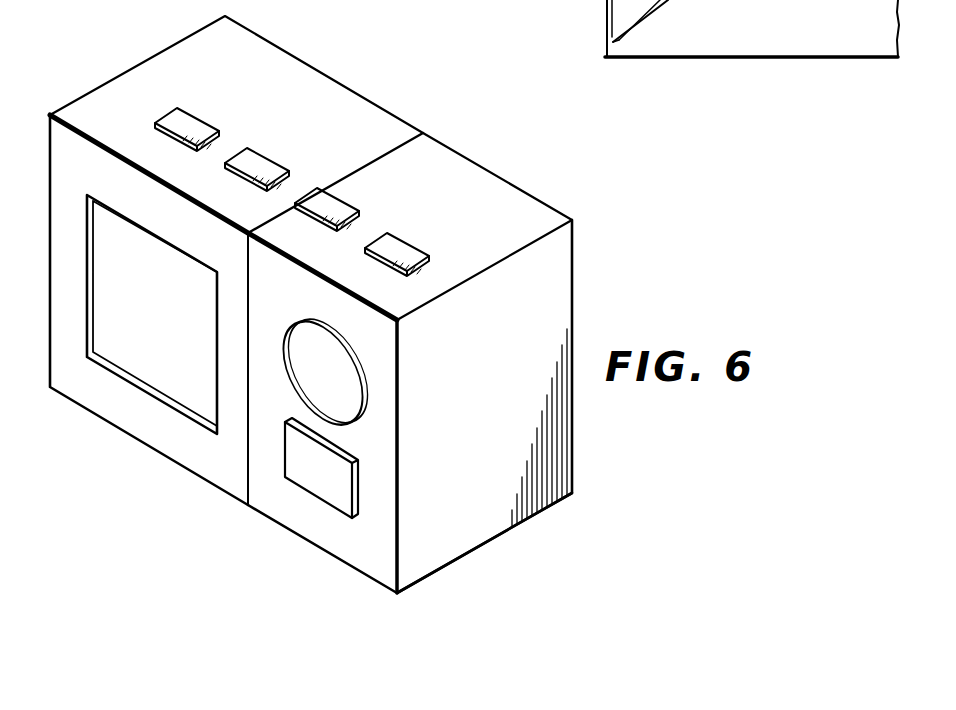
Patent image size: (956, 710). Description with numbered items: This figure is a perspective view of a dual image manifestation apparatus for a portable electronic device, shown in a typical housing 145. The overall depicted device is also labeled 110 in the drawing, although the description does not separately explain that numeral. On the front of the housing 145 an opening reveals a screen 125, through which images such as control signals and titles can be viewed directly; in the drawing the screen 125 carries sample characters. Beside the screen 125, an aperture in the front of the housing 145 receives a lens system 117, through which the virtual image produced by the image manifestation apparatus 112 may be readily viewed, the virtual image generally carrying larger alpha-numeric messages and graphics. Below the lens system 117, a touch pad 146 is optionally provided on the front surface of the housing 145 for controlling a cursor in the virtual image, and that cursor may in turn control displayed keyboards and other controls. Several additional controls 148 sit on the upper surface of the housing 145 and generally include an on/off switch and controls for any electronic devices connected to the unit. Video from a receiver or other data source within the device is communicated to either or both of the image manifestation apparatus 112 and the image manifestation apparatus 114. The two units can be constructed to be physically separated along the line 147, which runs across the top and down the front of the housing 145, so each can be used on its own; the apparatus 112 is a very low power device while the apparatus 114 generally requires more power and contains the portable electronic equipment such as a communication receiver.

The housing 110 is at (158, 576).
The image manifestation apparatus 112 is at (500, 157).
The image manifestation apparatus 114 is at (322, 52).
The lens system 117 is at (291, 333).
The screen 125 is at (150, 380).
The housing 145 is at (485, 525).
The touch pad 146 is at (317, 497).
The line 147 is at (250, 485).
The controls 148 is at (197, 118).